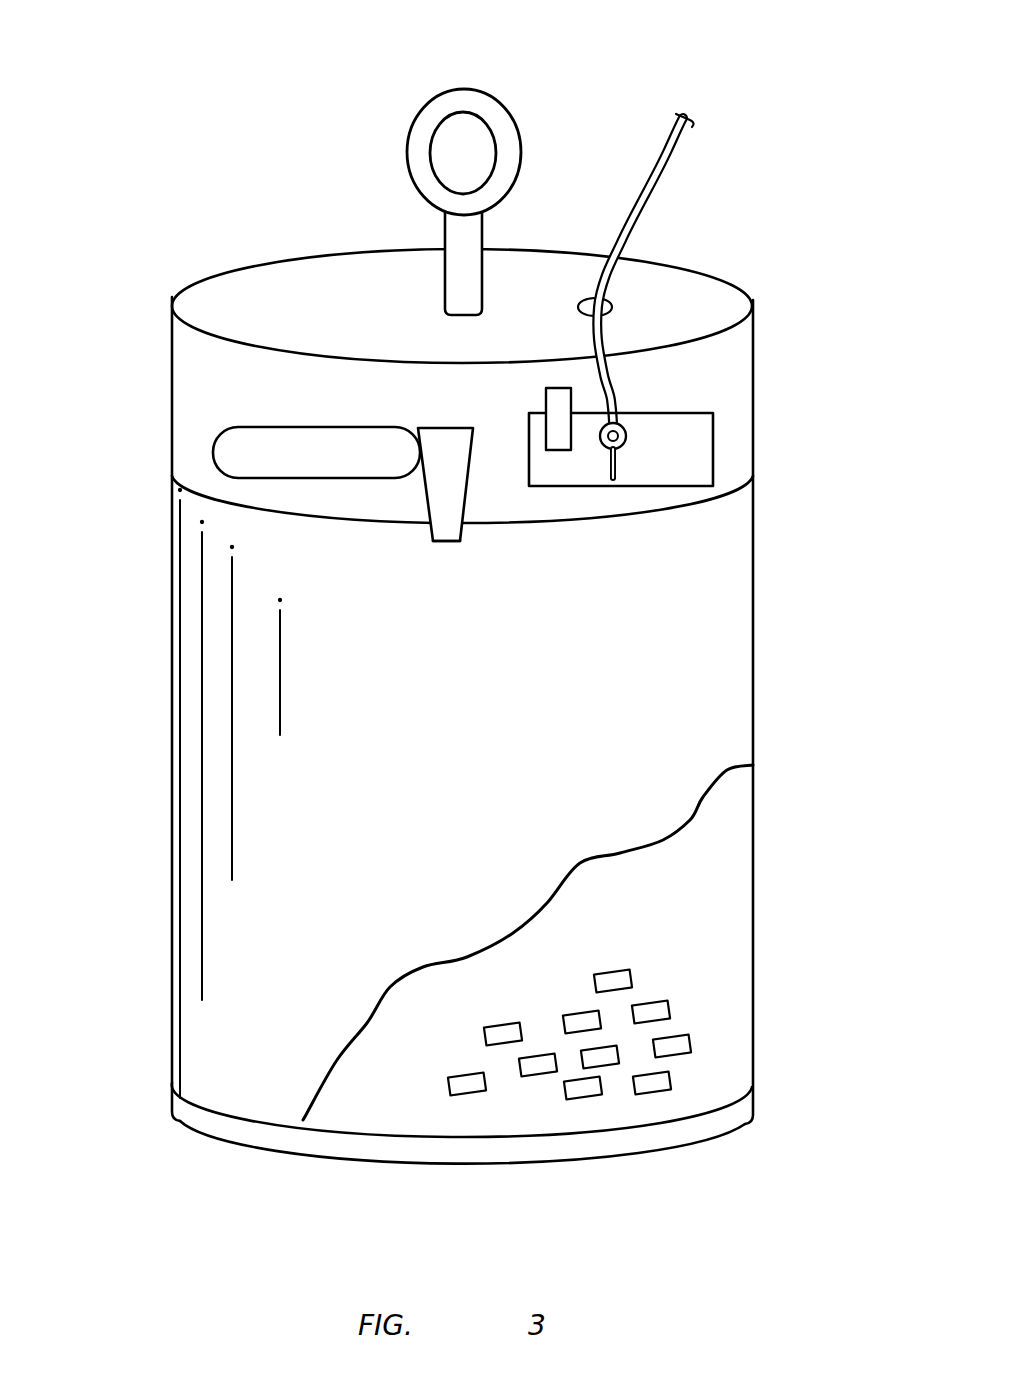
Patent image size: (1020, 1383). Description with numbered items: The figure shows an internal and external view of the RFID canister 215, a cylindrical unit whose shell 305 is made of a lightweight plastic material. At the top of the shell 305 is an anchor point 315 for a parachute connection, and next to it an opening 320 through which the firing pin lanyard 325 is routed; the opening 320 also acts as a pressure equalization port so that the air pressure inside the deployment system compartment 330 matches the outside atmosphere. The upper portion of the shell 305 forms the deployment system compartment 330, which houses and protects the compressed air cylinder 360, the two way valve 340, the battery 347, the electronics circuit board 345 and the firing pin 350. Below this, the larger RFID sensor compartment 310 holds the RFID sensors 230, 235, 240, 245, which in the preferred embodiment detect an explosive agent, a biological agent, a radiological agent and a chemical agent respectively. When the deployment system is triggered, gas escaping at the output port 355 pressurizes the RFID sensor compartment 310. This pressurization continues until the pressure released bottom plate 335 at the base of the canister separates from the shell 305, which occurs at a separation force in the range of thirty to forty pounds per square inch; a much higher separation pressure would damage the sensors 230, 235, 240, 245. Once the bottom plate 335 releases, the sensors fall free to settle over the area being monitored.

The RFID canister 215 is at (200, 208).
The shell 305 is at (755, 677).
The RFID sensor compartment 310 is at (692, 898).
The anchor point 315 is at (495, 104).
The opening 320 is at (612, 312).
The firing pin lanyard 325 is at (680, 150).
The deployment system compartment 330 is at (208, 373).
The pressure released bottom plate 335 is at (740, 1113).
The two way valve 340 is at (452, 440).
The electronics circuit board 345 is at (713, 428).
The battery 347 is at (545, 396).
The firing pin 350 is at (616, 460).
The output port 355 is at (447, 542).
The compressed air cylinder 360 is at (222, 447).
The RFID sensor 230 is at (650, 1092).
The RFID sensor 235 is at (583, 1093).
The RFID sensor 240 is at (463, 1090).
The RFID sensor 245 is at (537, 1072).